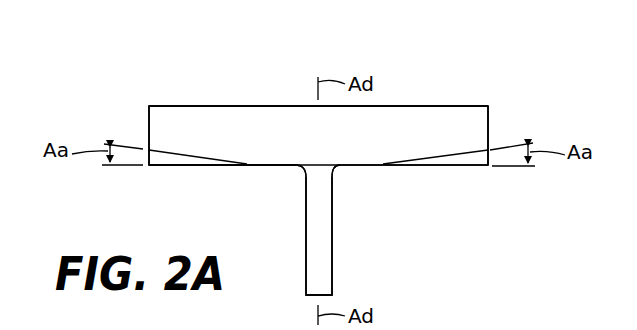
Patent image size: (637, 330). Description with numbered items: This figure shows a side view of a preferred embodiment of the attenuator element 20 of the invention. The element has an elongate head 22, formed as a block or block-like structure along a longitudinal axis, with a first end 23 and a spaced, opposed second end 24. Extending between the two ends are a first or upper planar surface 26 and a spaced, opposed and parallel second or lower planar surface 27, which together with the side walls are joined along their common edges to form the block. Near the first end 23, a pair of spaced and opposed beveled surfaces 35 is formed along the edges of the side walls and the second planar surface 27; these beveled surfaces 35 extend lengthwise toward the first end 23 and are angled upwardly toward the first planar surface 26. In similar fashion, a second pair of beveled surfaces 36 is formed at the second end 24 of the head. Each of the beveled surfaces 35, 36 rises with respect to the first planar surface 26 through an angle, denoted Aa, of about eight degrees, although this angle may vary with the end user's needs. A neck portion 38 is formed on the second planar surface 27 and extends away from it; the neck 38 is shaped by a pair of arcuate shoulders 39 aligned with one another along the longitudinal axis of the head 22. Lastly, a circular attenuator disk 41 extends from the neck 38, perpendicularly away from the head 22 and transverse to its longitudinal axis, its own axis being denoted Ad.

The attenuator element 20 is at (441, 104).
The elongate head 22 is at (333, 148).
The first end 23 is at (148, 121).
The second end 24 is at (488, 118).
The first planar surface 26 is at (244, 106).
The second planar surface 27 is at (268, 166).
The beveled surfaces 35 is at (167, 166).
The second beveled surfaces 36 is at (470, 166).
The neck portion 38 is at (315, 173).
The arcuate shoulders 39 is at (299, 168).
The attenuator disk 41 is at (326, 272).